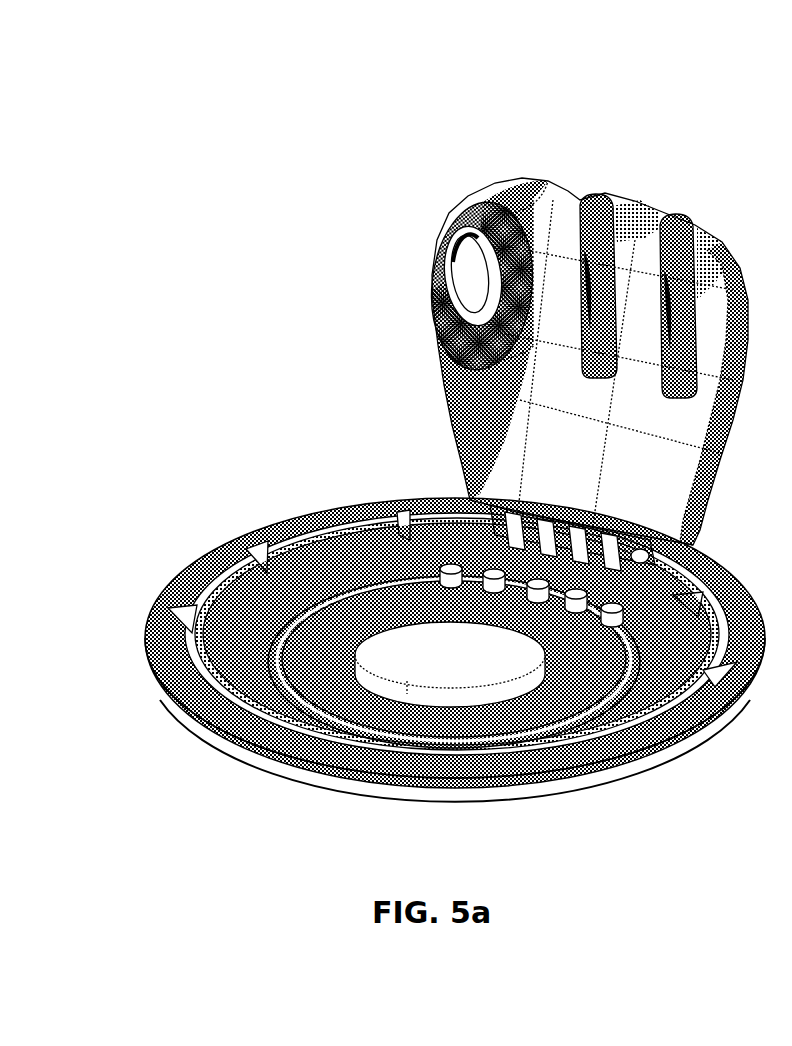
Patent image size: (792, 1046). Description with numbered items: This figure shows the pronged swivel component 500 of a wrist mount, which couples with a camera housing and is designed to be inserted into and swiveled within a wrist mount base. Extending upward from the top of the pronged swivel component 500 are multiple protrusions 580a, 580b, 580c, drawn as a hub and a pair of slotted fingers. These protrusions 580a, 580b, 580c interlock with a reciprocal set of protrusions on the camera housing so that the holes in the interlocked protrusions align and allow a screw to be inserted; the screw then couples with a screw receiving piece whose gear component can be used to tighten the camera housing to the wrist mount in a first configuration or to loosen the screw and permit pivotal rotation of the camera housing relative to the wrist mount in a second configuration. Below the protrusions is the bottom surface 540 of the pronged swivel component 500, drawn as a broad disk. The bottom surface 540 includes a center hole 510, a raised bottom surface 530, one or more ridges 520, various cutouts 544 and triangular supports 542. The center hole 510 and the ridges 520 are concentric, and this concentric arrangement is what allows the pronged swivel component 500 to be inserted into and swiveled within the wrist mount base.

The pronged swivel component 500 is at (297, 782).
The center hole 510 is at (443, 669).
The ridges 520 is at (605, 710).
The raised bottom surface 530 is at (657, 710).
The bottom surface 540 is at (722, 702).
The triangular supports 542 is at (242, 551).
The cutouts 544 is at (508, 524).
The protrusion 580a is at (697, 214).
The protrusion 580b is at (593, 190).
The protrusion 580c is at (492, 188).